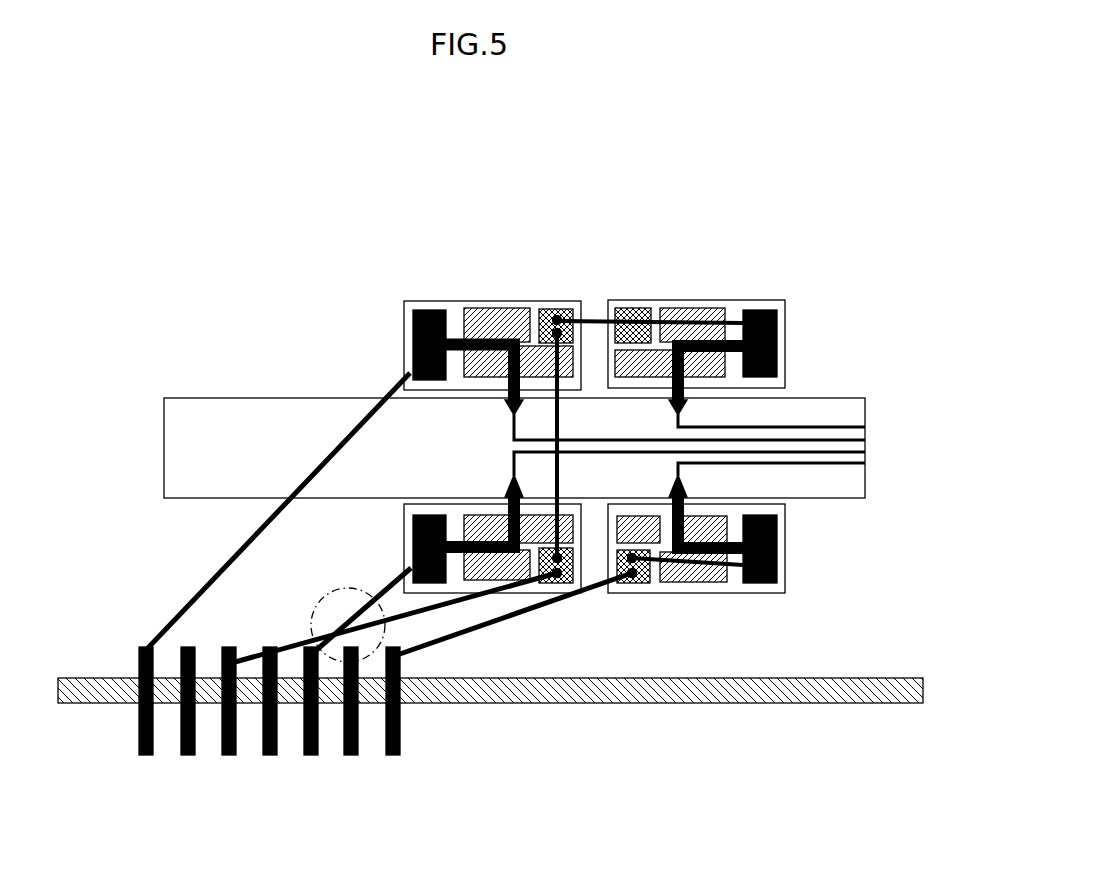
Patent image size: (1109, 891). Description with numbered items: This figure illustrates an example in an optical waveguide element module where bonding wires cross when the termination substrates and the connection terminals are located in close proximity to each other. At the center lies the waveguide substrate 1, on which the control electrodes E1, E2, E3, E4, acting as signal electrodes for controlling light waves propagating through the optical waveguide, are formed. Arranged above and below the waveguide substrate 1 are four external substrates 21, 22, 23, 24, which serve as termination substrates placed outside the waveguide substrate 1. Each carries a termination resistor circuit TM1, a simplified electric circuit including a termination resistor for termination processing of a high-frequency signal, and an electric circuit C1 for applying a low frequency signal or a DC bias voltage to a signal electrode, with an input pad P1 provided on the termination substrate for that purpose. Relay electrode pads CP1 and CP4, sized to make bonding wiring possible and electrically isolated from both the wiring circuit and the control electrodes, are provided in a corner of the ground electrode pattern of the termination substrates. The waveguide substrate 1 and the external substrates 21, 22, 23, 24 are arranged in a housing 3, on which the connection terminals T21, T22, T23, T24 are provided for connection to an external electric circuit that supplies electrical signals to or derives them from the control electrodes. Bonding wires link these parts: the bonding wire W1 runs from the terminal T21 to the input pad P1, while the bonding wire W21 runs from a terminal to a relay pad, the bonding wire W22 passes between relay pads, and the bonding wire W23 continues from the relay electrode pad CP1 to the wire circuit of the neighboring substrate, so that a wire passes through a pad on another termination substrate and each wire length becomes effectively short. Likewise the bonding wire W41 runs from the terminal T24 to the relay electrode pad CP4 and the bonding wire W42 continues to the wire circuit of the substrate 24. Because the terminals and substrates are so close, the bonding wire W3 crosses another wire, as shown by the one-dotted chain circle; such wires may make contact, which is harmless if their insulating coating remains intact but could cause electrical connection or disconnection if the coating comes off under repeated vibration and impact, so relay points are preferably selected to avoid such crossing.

The waveguide substrate 1 is at (248, 447).
The housing 3 is at (670, 702).
The external substrate 21 is at (462, 326).
The external substrate 22 is at (749, 300).
The external substrate 23 is at (517, 593).
The external substrate 24 is at (718, 570).
The termination resistor circuit TM1 is at (493, 302).
The relay electrode pad CP1 is at (563, 305).
The relay electrode pad CP4 is at (632, 585).
The input pad P1 is at (412, 325).
The electric circuit C1 is at (460, 353).
The control electrode E1 is at (689, 427).
The control electrode E2 is at (771, 413).
The control electrode E3 is at (689, 465).
The control electrode E4 is at (771, 475).
The bonding wire W1 is at (278, 511).
The bonding wire W3 is at (362, 607).
The bonding wire W21 is at (396, 617).
The bonding wire W22 is at (555, 477).
The bonding wire W23 is at (680, 308).
The bonding wire W41 is at (514, 614).
The bonding wire W42 is at (670, 570).
The connection terminal T21 is at (140, 743).
The connection terminal T22 is at (220, 747).
The connection terminal T23 is at (317, 748).
The connection terminal T24 is at (398, 750).